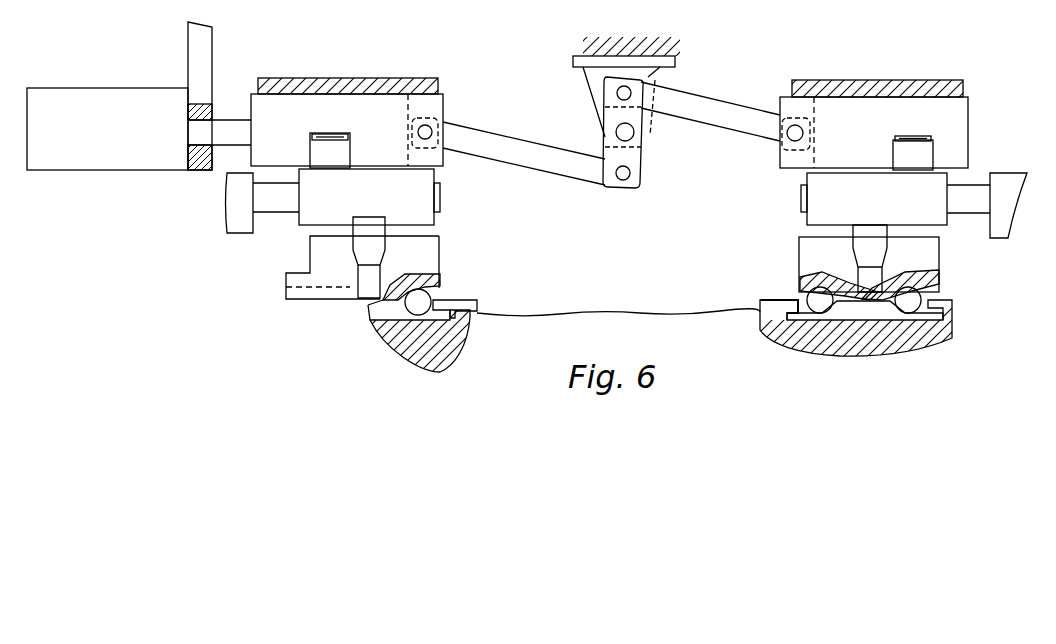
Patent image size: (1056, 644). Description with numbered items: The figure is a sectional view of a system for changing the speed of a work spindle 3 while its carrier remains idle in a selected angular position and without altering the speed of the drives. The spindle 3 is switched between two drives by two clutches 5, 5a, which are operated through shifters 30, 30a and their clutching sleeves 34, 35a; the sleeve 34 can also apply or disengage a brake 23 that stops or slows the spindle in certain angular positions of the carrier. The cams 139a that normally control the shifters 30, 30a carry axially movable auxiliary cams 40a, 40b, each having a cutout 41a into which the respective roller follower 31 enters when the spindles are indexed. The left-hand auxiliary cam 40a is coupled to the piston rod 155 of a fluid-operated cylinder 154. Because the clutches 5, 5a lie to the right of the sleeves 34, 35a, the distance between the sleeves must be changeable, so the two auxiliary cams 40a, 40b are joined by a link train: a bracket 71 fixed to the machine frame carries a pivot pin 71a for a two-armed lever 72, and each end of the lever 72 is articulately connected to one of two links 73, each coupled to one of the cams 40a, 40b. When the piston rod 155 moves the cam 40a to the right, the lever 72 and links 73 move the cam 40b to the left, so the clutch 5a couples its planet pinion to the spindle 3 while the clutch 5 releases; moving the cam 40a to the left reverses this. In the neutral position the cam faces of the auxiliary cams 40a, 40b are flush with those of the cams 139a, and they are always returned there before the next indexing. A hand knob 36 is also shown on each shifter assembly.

The fluid-operated cylinder 154 is at (96, 97).
The piston rod 155 is at (230, 128).
The auxiliary cam 40a is at (270, 102).
The cam 139a is at (341, 85).
The roller follower 31 is at (318, 147).
The cutout 41a is at (349, 135).
The shifter 30a is at (315, 210).
The hand knob 36 is at (262, 203).
The sleeve 35a is at (320, 276).
The clutch 5a is at (459, 302).
The work spindle 3 is at (462, 331).
The bracket 71 is at (665, 75).
The pivot pin 71a is at (628, 134).
The two-armed lever 72 is at (633, 153).
The link 73 is at (573, 168).
The auxiliary cam 40b is at (958, 103).
The shifter 30 is at (935, 222).
The clutching sleeve 34 is at (938, 262).
The clutch 5 is at (947, 316).
The brake 23 is at (779, 299).